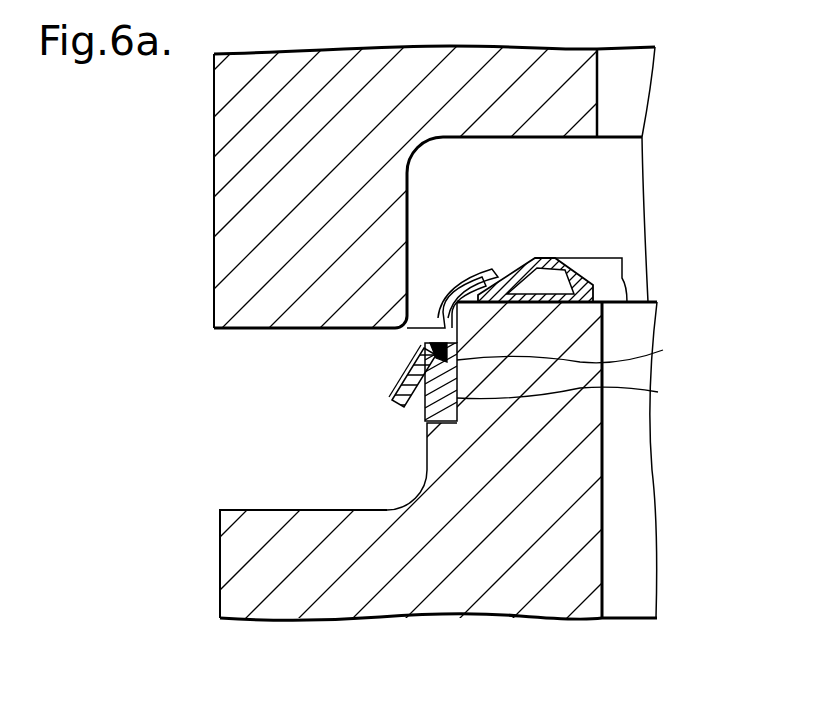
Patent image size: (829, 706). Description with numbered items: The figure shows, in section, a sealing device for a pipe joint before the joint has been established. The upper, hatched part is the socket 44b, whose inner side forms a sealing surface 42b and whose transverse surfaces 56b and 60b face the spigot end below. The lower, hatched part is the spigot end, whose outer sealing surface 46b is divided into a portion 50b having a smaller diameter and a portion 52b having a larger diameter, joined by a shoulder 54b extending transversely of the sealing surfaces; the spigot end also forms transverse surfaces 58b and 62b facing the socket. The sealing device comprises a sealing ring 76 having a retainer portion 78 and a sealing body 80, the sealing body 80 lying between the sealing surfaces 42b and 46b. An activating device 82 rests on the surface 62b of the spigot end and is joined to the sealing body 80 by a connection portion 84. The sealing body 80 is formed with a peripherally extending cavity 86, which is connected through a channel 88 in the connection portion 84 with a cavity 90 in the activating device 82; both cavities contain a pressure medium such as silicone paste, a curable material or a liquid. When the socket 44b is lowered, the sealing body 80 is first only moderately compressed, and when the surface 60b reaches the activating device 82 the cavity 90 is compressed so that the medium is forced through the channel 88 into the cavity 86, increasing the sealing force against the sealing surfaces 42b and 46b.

The socket 44b is at (488, 74).
The sealing surface 42b is at (410, 213).
The surface 60b is at (560, 138).
The surface 62b is at (595, 259).
The activating device 82 is at (522, 268).
The cavity 90 is at (548, 278).
The channel 88 is at (480, 288).
The connection portion 84 is at (462, 295).
The surface 56b is at (272, 330).
The cavity 86 is at (430, 350).
The sealing body 80 is at (392, 382).
The sealing ring 76 is at (390, 400).
The retainer portion 78 is at (420, 402).
The shoulder 54b is at (427, 423).
The portion having a larger diameter 52b is at (423, 460).
The surface 58b is at (270, 520).
The portion having a smaller diameter 50b is at (584, 347).
The sealing surface 46b is at (581, 388).